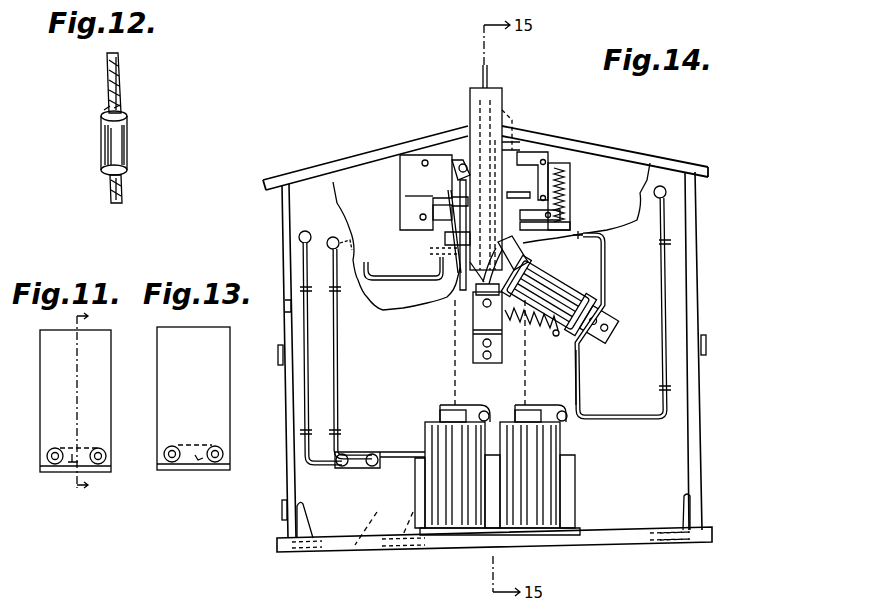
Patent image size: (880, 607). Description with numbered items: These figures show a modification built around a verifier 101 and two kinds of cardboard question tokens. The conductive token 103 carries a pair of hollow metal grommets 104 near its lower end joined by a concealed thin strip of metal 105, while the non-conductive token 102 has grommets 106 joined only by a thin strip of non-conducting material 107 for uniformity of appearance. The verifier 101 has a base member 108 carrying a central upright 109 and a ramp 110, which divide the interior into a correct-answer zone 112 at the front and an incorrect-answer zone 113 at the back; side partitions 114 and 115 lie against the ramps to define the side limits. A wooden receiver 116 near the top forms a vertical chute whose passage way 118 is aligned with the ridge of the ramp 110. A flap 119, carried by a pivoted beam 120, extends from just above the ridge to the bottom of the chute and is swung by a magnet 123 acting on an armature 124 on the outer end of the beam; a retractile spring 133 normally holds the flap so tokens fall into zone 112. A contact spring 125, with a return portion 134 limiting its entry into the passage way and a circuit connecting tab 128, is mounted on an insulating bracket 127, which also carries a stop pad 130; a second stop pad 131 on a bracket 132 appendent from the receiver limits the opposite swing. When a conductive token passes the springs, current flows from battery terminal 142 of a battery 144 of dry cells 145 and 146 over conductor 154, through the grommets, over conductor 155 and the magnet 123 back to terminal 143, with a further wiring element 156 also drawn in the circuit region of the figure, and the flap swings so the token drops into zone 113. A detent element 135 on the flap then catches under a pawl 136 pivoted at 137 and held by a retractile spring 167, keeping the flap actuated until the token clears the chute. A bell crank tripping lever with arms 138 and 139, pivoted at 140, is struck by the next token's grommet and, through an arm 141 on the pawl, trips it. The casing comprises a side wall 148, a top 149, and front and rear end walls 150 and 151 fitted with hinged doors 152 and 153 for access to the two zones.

In FIG. 14, the verifier 101 is at (501, 345).
In FIG. 13, the non-conductive token 102 is at (222, 352).
In FIG. 12, the conductive token 103 is at (119, 82).
In FIG. 11, the conductive token 103 is at (100, 367).
In FIG. 14, the conductive token 103 is at (481, 78).
In FIG. 12, the grommets 104 is at (101, 147).
In FIG. 11, the grommets 104 is at (47, 455).
In FIG. 14, the grommets 104 is at (432, 150).
In FIG. 12, the thin strip of metal 105 is at (104, 113).
In FIG. 11, the thin strip of metal 105 is at (70, 465).
In FIG. 13, the grommets 106 is at (222, 450).
In FIG. 13, the thin strip of non-conducting material 107 is at (195, 470).
In FIG. 14, the base member 108 is at (655, 542).
In FIG. 14, the upright 109 is at (458, 292).
In FIG. 14, the ramp 110 is at (455, 382).
In FIG. 14, the correct-answer zone 112 is at (648, 505).
In FIG. 14, the incorrect-answer zone 113 is at (352, 552).
In FIG. 14, the side partition 114 is at (300, 205).
In FIG. 14, the side partition 115 is at (380, 168).
In FIG. 14, the receiver 116 is at (470, 97).
In FIG. 14, the passage way 118 is at (496, 100).
In FIG. 14, the flap 119 is at (445, 250).
In FIG. 14, the pivoted beam 120 is at (472, 305).
In FIG. 14, the magnet 123 is at (578, 288).
In FIG. 14, the armature 124 is at (520, 272).
In FIG. 14, the contact spring 125 is at (452, 198).
In FIG. 14, the bracket 127 is at (456, 165).
In FIG. 14, the circuit connecting tab 128 is at (442, 268).
In FIG. 14, the stop pad 130 is at (425, 220).
In FIG. 14, the stop pad 131 is at (440, 242).
In FIG. 14, the bracket 132 is at (545, 248).
In FIG. 14, the retractile spring 133 is at (535, 338).
In FIG. 14, the return portion 134 is at (463, 164).
In FIG. 14, the detent element 135 is at (447, 205).
In FIG. 14, the pawl 136 is at (570, 205).
In FIG. 14, the pivot 137 is at (572, 226).
In FIG. 14, the arm of tripping lever 138 is at (562, 163).
In FIG. 14, the arm of tripping lever 139 is at (508, 140).
In FIG. 14, the pivot 140 is at (545, 152).
In FIG. 14, the arm 141 is at (568, 190).
In FIG. 14, the battery terminal 142 is at (364, 468).
In FIG. 14, the battery terminal 143 is at (560, 404).
In FIG. 14, the battery 144 is at (500, 400).
In FIG. 14, the dry cell 145 is at (428, 434).
In FIG. 14, the dry cell 146 is at (545, 440).
In FIG. 14, the side wall 148 is at (312, 183).
In FIG. 14, the top 149 is at (340, 160).
In FIG. 14, the front end wall 150 is at (696, 238).
In FIG. 14, the rear end wall 151 is at (283, 240).
In FIG. 14, the hinged door 152 is at (707, 343).
In FIG. 14, the hinged door 153 is at (278, 358).
In FIG. 14, the conductor 154 is at (340, 298).
In FIG. 14, the conductor 155 is at (378, 265).
In FIG. 14, the conduit 156 is at (580, 376).
In FIG. 14, the retractile spring 167 is at (660, 186).